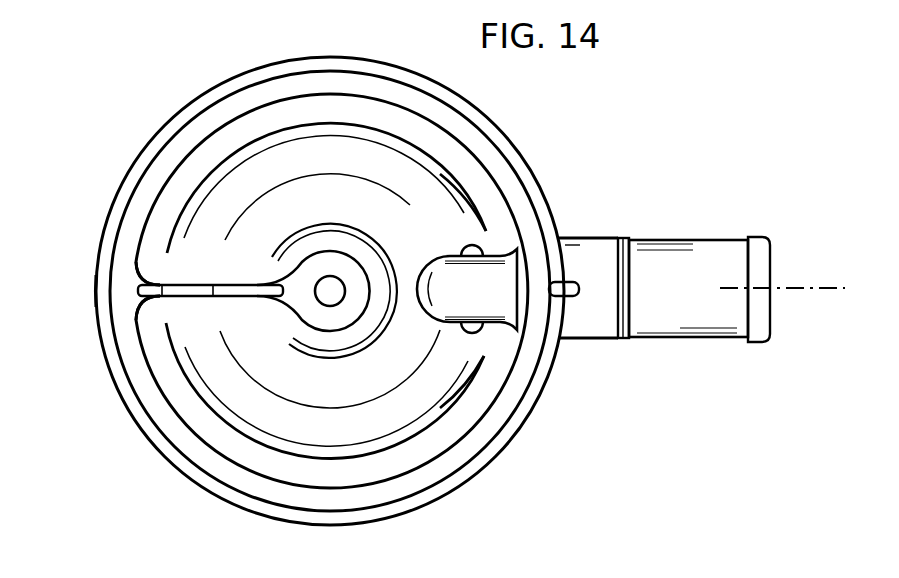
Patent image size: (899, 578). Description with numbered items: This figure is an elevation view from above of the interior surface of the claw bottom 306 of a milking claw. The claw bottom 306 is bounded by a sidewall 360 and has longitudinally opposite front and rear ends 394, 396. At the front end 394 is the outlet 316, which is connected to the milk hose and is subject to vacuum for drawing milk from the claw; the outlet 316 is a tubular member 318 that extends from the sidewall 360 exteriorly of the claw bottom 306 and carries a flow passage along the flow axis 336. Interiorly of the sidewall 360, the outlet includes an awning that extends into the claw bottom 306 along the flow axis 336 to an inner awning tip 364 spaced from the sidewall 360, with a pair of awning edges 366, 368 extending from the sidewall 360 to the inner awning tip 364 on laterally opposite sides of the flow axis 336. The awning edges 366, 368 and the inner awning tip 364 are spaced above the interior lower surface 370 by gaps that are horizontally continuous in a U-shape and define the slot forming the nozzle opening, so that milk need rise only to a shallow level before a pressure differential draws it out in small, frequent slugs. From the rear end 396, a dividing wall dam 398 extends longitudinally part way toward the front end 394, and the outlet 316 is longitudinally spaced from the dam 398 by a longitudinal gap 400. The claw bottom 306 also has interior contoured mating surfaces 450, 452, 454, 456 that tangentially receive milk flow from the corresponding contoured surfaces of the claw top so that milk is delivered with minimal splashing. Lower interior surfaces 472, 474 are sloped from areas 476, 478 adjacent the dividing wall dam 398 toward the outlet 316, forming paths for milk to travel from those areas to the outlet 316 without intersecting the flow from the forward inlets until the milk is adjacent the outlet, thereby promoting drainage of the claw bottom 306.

The claw bottom 306 is at (106, 368).
The outlet 316 is at (773, 257).
The tubular member 318 is at (600, 237).
The flow axis 336 is at (820, 287).
The sidewall 360 is at (507, 240).
The inner awning tip 364 is at (421, 284).
The awning edge 366 is at (466, 258).
The awning edge 368 is at (464, 325).
The interior lower surface 370 is at (407, 323).
The front end 394 is at (553, 362).
The rear end 396 is at (93, 285).
The dividing wall dam 398 is at (188, 281).
The longitudinal gap 400 is at (381, 284).
The mating surface 450 is at (152, 258).
The mating surface 452 is at (152, 313).
The mating surface 454 is at (488, 197).
The mating surface 456 is at (493, 367).
The lower interior surface 472 is at (297, 227).
The lower interior surface 474 is at (293, 350).
The area adjacent dividing wall dam 476 is at (247, 260).
The area adjacent dividing wall dam 478 is at (240, 312).